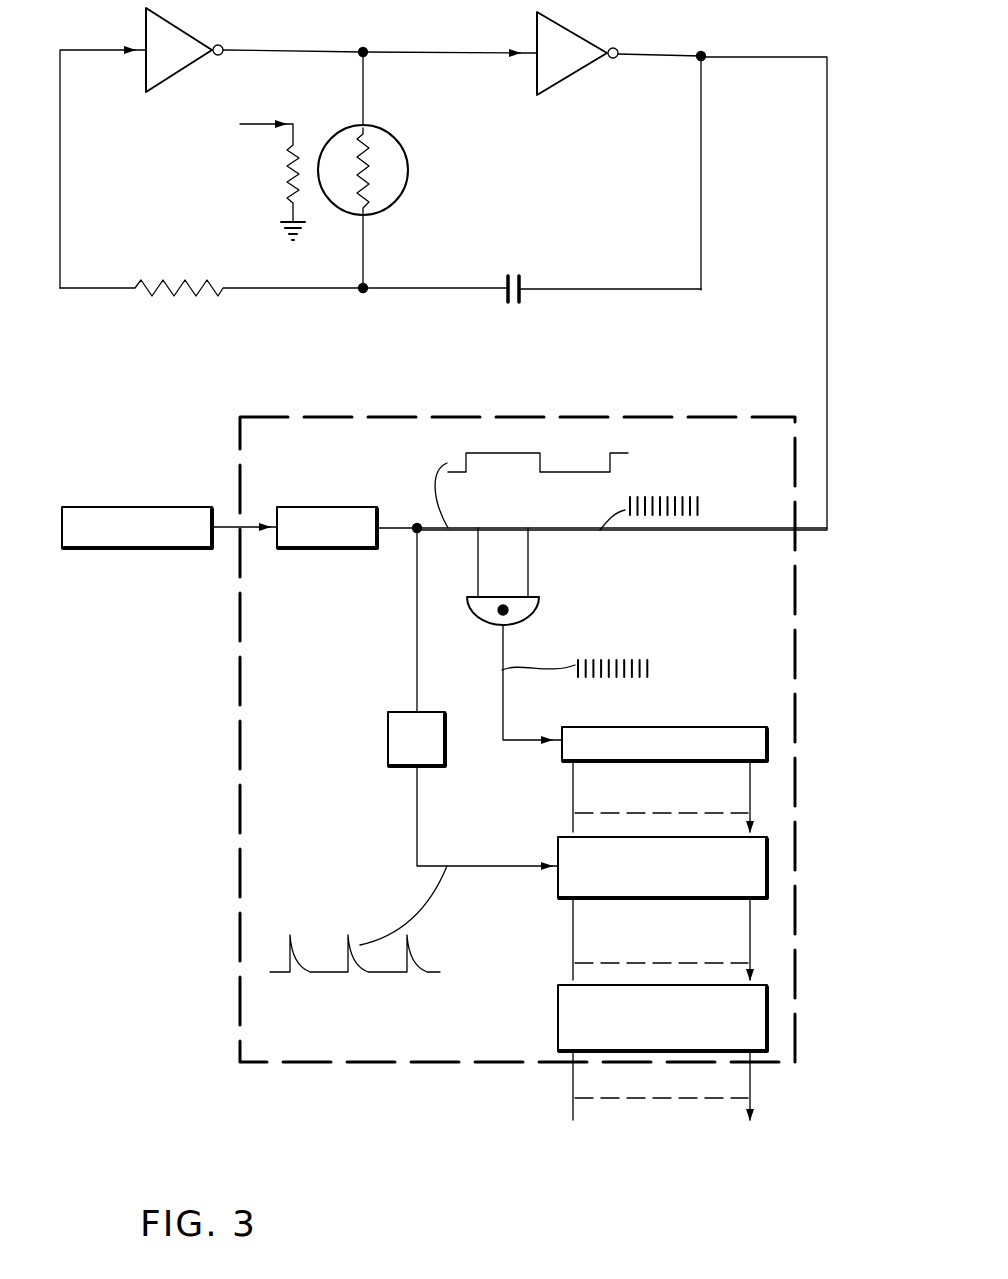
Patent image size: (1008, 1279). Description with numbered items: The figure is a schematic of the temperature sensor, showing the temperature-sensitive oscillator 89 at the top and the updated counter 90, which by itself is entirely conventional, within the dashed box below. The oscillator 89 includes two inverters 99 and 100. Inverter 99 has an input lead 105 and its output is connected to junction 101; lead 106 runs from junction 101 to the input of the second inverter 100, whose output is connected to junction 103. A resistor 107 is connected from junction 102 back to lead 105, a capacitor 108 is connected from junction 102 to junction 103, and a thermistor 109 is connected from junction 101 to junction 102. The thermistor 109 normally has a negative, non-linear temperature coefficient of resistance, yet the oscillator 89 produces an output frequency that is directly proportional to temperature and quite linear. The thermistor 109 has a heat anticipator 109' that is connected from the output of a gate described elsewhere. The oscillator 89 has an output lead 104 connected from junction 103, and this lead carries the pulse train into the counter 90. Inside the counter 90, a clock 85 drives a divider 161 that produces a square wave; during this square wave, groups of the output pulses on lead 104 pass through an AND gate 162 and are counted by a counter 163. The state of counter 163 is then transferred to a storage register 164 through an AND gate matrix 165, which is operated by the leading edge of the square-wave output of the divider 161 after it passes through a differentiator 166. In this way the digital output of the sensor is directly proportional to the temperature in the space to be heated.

The clock 85 is at (82, 550).
The temperature-sensitive oscillator 89 is at (132, 314).
The updated counter 90 is at (238, 729).
The inverter 99 is at (180, 26).
The inverter 100 is at (590, 43).
The junction 101 is at (366, 51).
The junction 102 is at (361, 293).
The junction 103 is at (705, 55).
The output lead 104 is at (782, 59).
The input lead 105 is at (62, 172).
The input lead 106 is at (447, 56).
The resistor 107 is at (172, 286).
The capacitor 108 is at (524, 282).
The thermistor 109 is at (405, 170).
The heat anticipator 109' is at (259, 182).
The divider 161 is at (314, 507).
The AND gate 162 is at (538, 604).
The counter 163 is at (704, 727).
The storage register 164 is at (558, 1001).
The AND gate matrix 165 is at (558, 851).
The differentiator 166 is at (388, 718).